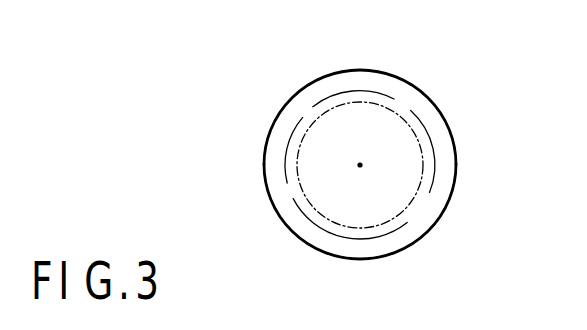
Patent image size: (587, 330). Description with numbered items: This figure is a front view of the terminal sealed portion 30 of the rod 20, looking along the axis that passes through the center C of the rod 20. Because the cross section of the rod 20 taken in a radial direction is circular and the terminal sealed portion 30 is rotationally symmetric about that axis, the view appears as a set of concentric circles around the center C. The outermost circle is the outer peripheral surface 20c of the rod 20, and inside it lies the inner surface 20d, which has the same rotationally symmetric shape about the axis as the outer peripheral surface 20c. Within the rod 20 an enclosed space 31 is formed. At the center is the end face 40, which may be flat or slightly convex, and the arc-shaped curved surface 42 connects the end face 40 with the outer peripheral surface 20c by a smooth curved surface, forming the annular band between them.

The terminal sealed portion 30 is at (443, 83).
The rod 20 is at (267, 196).
The outer peripheral surface 20c is at (457, 173).
The inner surface 20d is at (300, 131).
The enclosed space 31 is at (305, 163).
The end face 40 is at (400, 150).
The arc-shaped curved surface 42 is at (363, 80).
The center C is at (363, 167).